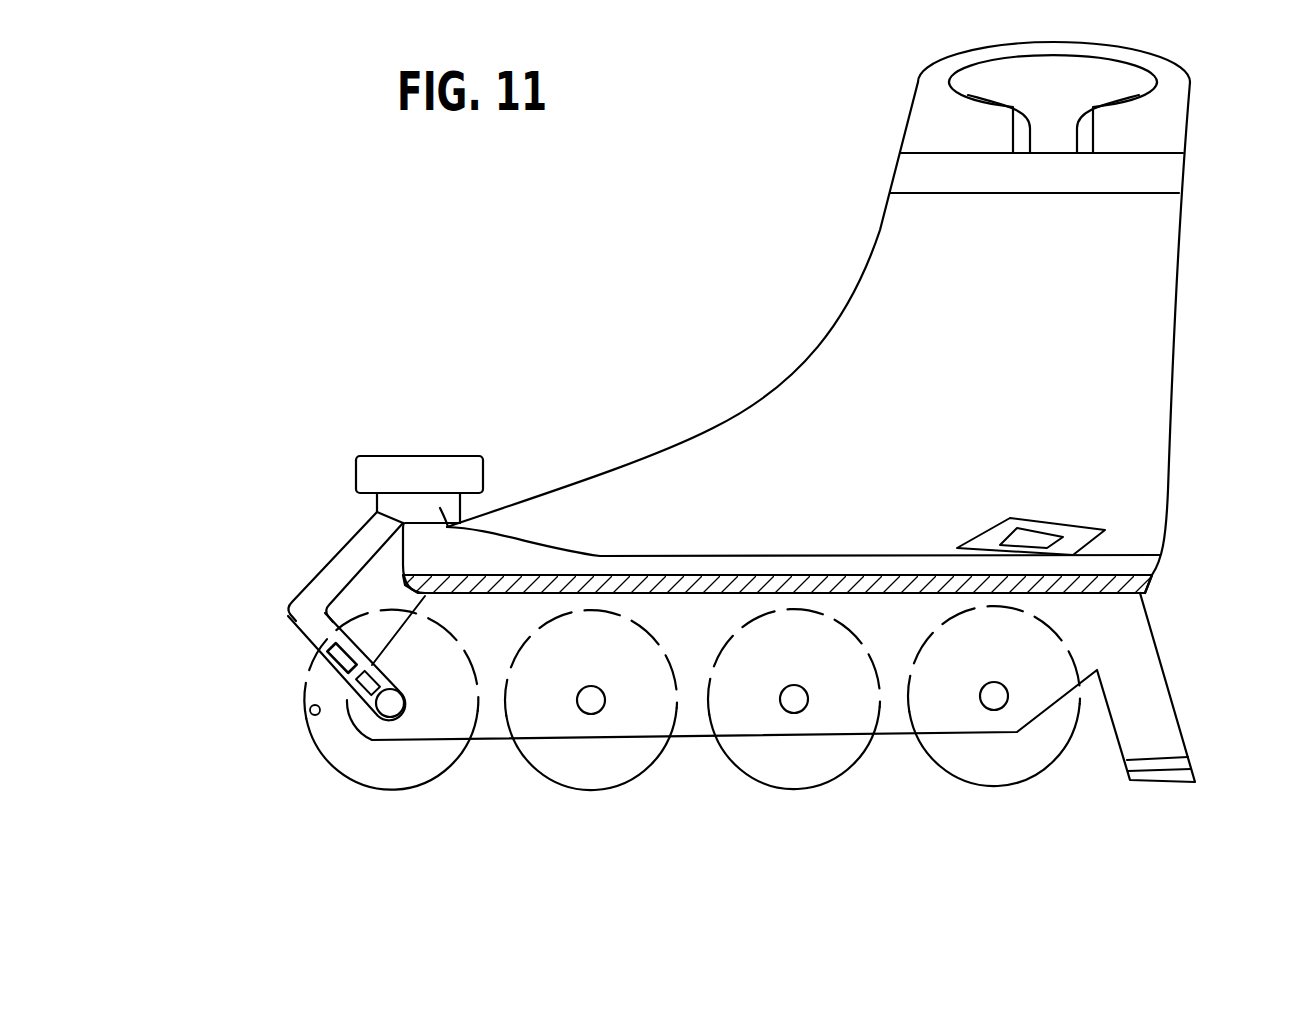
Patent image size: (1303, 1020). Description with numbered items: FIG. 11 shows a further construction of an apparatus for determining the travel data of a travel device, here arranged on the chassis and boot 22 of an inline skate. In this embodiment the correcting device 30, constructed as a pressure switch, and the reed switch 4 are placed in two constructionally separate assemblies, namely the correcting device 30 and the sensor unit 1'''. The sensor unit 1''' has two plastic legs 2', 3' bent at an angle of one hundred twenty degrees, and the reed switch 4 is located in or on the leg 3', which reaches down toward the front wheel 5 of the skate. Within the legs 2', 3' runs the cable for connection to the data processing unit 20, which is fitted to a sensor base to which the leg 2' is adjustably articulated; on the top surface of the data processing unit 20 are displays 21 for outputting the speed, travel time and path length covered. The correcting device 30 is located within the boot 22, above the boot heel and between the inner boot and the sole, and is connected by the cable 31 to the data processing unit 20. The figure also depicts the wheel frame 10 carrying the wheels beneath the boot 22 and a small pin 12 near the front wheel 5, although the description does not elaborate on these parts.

The sensor unit 1''' is at (730, 470).
The leg 2' is at (330, 536).
The leg 3' is at (321, 658).
The reed switch 4 is at (327, 670).
The front wheel 5 is at (400, 773).
The wheel frame 10 is at (842, 710).
The pivot pin 12 is at (316, 714).
The data processing unit 20 is at (493, 468).
The displays 21 is at (418, 467).
The boot 22 is at (868, 255).
The correcting device 30 is at (1090, 514).
The cable 31 is at (748, 552).